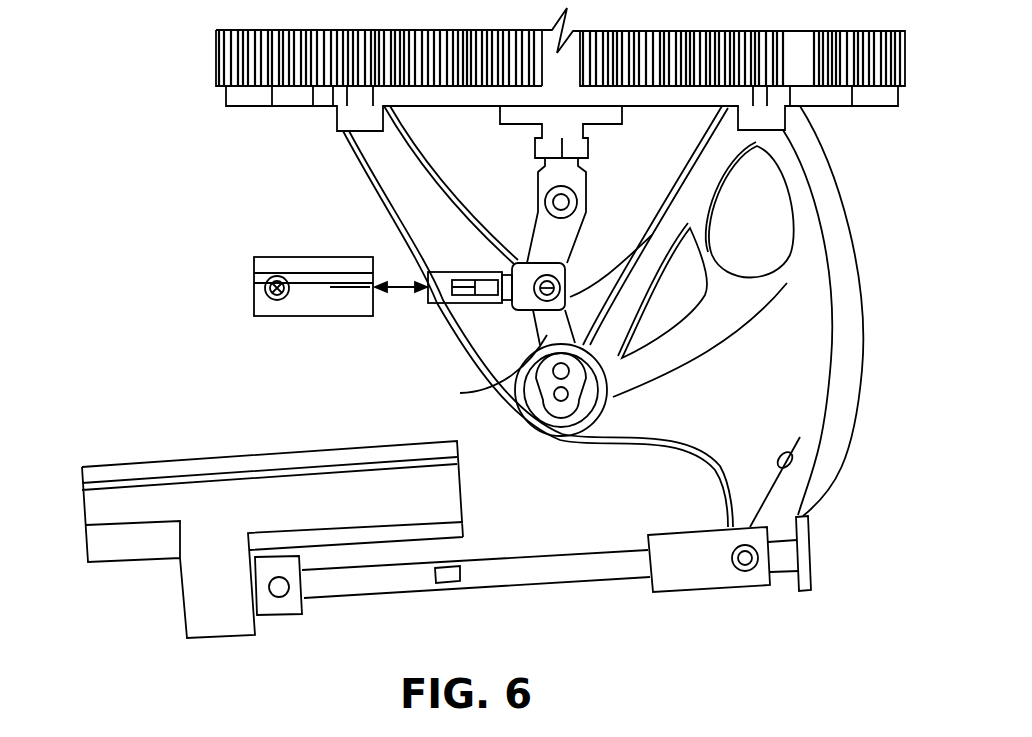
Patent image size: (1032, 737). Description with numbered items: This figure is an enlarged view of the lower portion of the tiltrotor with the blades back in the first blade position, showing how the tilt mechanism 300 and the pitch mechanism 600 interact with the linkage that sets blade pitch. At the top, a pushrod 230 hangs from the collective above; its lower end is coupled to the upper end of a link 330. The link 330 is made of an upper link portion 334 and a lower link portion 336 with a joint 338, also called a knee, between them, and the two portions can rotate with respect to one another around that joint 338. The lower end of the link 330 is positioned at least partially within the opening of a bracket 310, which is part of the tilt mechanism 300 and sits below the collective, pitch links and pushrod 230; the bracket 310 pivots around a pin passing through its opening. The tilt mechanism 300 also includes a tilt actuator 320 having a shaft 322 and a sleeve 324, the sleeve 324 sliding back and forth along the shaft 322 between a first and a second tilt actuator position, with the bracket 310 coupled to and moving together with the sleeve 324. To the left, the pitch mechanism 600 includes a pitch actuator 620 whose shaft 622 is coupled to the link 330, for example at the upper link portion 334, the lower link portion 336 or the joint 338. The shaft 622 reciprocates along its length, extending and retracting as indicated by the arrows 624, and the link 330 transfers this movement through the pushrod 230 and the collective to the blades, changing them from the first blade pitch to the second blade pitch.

The pushrod 230 is at (585, 130).
The tilt mechanism 300 is at (112, 428).
The bracket 310 is at (863, 336).
The tilt actuator 320 is at (83, 515).
The shaft 322 is at (573, 586).
The sleeve 324 is at (728, 592).
The link 330 is at (514, 190).
The upper link portion 334 is at (573, 250).
The lower link portion 336 is at (478, 394).
The joint 338 is at (508, 300).
The pitch mechanism 600 is at (280, 180).
The pitch actuator 620 is at (278, 257).
The shaft 622 is at (472, 272).
The arrows 624 is at (398, 292).